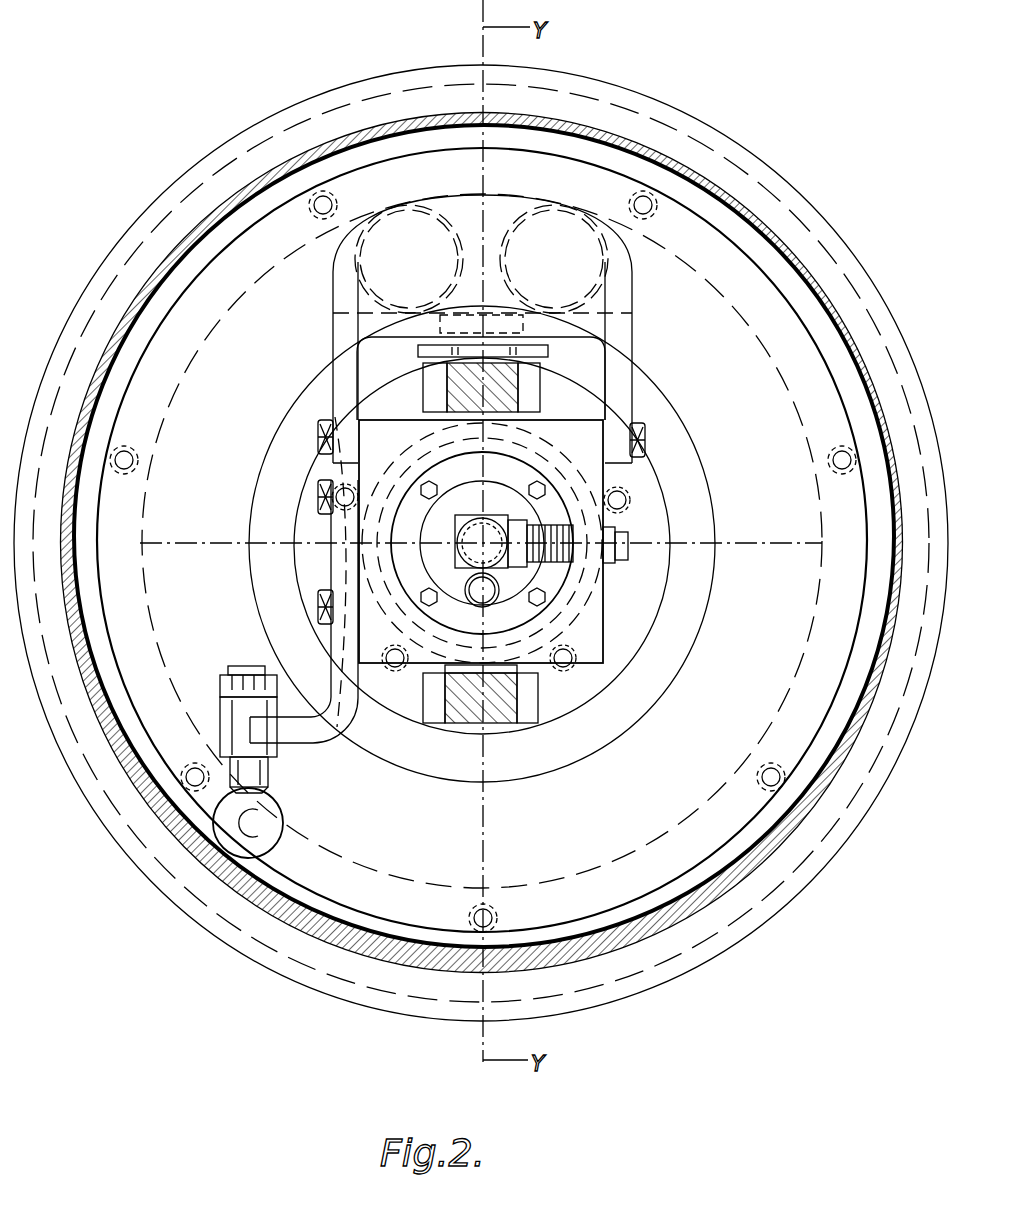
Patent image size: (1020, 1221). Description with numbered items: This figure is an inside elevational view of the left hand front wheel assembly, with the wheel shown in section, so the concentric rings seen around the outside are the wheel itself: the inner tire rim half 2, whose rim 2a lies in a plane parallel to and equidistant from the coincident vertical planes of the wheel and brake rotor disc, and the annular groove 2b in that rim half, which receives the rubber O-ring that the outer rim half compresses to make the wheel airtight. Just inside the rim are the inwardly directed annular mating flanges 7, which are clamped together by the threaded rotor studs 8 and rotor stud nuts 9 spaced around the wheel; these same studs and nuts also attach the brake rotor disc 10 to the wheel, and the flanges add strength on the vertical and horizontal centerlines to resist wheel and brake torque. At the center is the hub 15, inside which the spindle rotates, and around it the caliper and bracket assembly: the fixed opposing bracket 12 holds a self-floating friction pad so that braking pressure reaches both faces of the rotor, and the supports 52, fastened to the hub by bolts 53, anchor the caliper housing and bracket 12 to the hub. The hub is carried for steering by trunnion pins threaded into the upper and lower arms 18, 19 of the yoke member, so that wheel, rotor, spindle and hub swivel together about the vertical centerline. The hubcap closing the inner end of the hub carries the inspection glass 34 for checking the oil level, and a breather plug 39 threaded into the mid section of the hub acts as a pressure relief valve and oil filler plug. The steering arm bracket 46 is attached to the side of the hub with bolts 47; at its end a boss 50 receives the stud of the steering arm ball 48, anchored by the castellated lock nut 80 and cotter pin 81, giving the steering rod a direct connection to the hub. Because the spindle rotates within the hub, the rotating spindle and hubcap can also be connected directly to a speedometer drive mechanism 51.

The wheel rim 2a is at (366, 78).
The inner tire rim half 2 is at (439, 110).
The annular groove 2b is at (410, 148).
The annular mating flanges 7 is at (233, 293).
The rotor studs 8 is at (311, 214).
The rotor stud nuts 9 is at (337, 201).
The brake rotor disc 10 is at (528, 329).
The fixed opposing bracket 12 is at (492, 239).
The hub 15 is at (588, 629).
The upper arm 18 is at (440, 396).
The lower arm 19 is at (523, 710).
The inspection glass 34 is at (483, 593).
The breather plug 39 is at (630, 543).
The steering arm bracket 46 is at (340, 563).
The bolts 47 is at (320, 502).
The steering arm ball 48 is at (267, 820).
The boss 50 is at (277, 755).
The speedometer drive mechanism 51 is at (580, 548).
The supports 52 is at (616, 353).
The bolts 53 is at (636, 421).
The castellated lock nut 80 is at (225, 692).
The cotter pin 81 is at (247, 675).